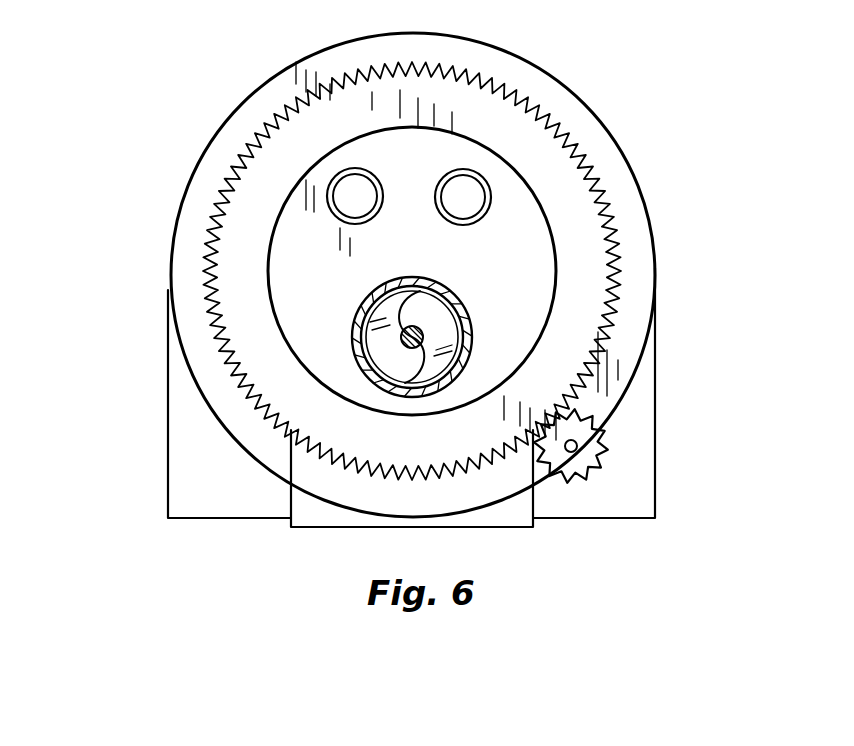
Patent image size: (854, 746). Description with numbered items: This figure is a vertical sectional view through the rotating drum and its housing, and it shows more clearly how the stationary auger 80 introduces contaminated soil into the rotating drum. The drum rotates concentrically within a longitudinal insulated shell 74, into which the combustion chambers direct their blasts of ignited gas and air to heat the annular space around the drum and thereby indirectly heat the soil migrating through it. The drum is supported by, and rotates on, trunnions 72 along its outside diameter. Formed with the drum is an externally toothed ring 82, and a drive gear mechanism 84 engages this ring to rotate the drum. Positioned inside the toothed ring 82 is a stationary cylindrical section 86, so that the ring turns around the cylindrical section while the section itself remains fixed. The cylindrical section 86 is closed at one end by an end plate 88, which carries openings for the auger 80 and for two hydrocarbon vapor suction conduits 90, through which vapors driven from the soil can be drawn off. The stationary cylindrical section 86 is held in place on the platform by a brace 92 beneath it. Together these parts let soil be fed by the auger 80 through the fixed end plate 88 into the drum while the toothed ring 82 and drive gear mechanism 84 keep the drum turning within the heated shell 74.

The trunnion 72 is at (203, 483).
The insulated shell 74 is at (627, 150).
The auger 80 is at (393, 355).
The externally toothed ring 82 is at (257, 222).
The drive gear mechanism 84 is at (610, 452).
The stationary cylindrical section 86 is at (557, 263).
The end plate 88 is at (427, 255).
The hydrocarbon vapor suction conduits 90 is at (342, 170).
The brace 92 is at (495, 498).